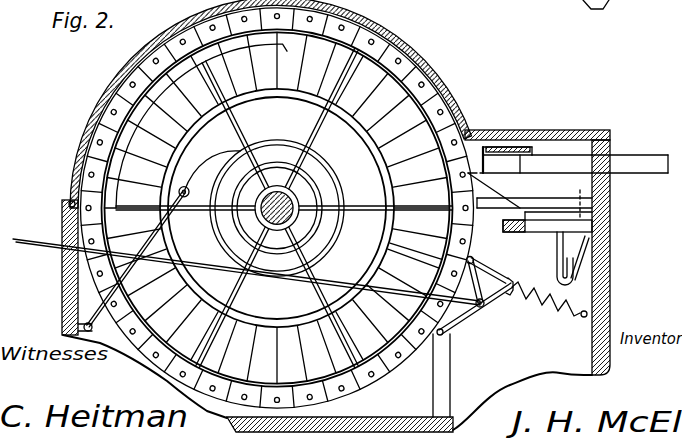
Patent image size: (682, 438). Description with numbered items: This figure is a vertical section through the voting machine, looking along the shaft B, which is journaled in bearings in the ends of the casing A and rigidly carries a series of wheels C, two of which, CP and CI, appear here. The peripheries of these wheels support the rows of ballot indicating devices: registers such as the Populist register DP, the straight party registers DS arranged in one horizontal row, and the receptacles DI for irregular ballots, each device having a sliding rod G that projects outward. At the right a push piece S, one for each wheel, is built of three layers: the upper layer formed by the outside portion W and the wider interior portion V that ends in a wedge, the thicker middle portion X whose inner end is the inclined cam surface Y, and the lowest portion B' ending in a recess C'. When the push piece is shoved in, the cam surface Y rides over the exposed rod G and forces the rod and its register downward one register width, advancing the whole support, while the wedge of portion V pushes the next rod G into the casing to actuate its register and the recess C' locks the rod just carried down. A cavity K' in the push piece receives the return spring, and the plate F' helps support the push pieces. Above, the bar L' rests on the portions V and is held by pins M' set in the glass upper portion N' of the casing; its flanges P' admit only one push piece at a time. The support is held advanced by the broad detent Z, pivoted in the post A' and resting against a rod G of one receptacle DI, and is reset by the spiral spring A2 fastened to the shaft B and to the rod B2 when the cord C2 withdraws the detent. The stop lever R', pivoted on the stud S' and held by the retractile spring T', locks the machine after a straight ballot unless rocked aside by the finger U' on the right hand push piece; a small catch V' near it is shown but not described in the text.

The sliding rod G is at (335, 391).
The straight party register DS is at (453, 160).
The outer ring C is at (277, 207).
The wheel CP is at (423, 134).
The irregular ballot receptacle DI is at (416, 247).
The wheel CI is at (380, 168).
The cord or wire C2 is at (348, 278).
The spiral spring A2 is at (290, 141).
The shaft B is at (273, 208).
The register DP is at (100, 165).
The rod B2 is at (167, 222).
The upper portion of casing N' is at (537, 124).
The casing A is at (614, 257).
The bar L' is at (508, 130).
The pin M' is at (512, 127).
The flange P' is at (507, 160).
The interior portion of push piece V is at (562, 163).
The push piece S is at (536, 169).
The projecting portion W is at (630, 174).
The inclined cam surface Y is at (491, 189).
The middle portion of push piece X is at (534, 196).
The cavity K' is at (577, 199).
The plate F' is at (547, 231).
The recess C' is at (507, 222).
The finger U' is at (553, 258).
The lowest portion of push piece B' is at (580, 258).
The retractile spring T' is at (549, 303).
The stud S' is at (478, 271).
The stop lever R' is at (488, 269).
The catch V' is at (513, 279).
The detent Z is at (462, 323).
The post A' is at (452, 373).